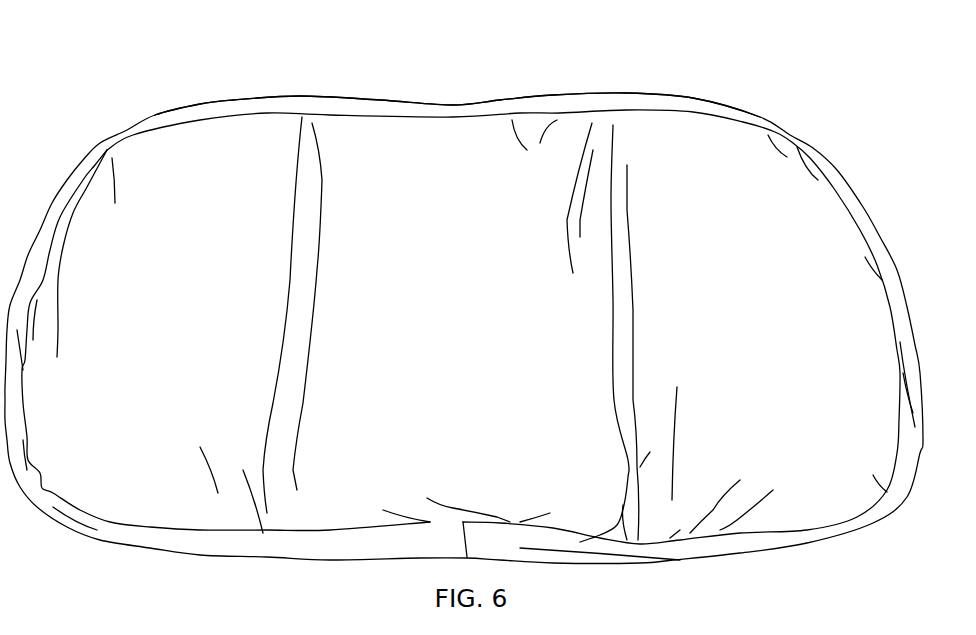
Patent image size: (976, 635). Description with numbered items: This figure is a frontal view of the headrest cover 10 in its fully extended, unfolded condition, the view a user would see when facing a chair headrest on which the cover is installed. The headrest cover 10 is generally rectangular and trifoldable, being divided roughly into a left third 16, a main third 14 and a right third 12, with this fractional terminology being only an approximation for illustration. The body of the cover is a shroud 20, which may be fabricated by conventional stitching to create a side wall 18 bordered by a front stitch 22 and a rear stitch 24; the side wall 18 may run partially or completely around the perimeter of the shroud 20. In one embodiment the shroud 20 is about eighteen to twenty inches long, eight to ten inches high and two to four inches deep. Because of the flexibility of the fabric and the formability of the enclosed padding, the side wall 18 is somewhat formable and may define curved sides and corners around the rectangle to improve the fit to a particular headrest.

The headrest cover 10 is at (345, 80).
The right third 12 is at (749, 337).
The main third 14 is at (444, 333).
The left third 16 is at (159, 333).
The side wall 18 is at (303, 555).
The shroud 20 is at (400, 257).
The front stitch 22 is at (697, 113).
The rear stitch 24 is at (615, 97).